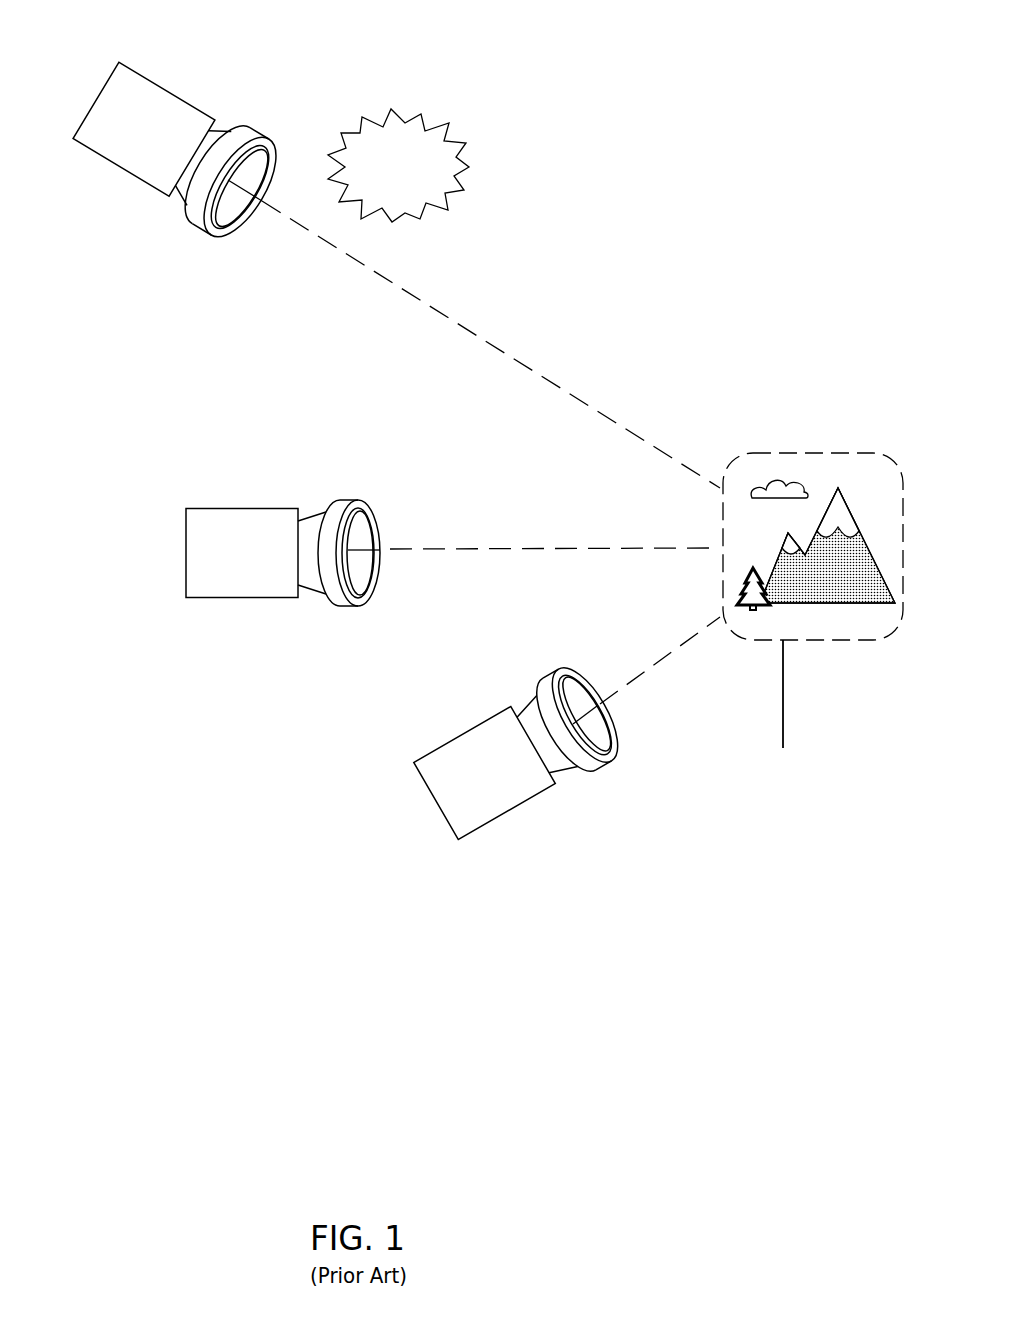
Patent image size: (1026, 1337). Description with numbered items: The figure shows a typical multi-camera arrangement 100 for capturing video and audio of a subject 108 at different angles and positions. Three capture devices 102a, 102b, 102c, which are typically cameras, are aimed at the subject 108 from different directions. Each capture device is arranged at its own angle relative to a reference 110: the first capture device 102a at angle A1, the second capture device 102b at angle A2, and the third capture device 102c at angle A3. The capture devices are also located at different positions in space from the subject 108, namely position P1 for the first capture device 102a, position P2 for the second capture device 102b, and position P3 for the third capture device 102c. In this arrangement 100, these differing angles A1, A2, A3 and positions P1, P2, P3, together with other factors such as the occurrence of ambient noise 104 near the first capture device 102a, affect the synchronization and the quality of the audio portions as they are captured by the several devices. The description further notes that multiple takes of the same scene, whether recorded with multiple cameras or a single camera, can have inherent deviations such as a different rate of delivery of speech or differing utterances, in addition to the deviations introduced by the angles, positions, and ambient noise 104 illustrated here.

The multi-camera arrangement 100 is at (693, 75).
The capture device 102a is at (128, 65).
The capture device 102b is at (248, 508).
The capture device 102c is at (463, 732).
The ambient noise 104 is at (447, 128).
The subject 108 is at (797, 453).
The reference 110 is at (787, 733).
The position P1 is at (533, 406).
The position P2 is at (584, 565).
The position P3 is at (694, 692).
The angle A1 is at (778, 725).
The angle A2 is at (778, 687).
The angle A3 is at (778, 665).